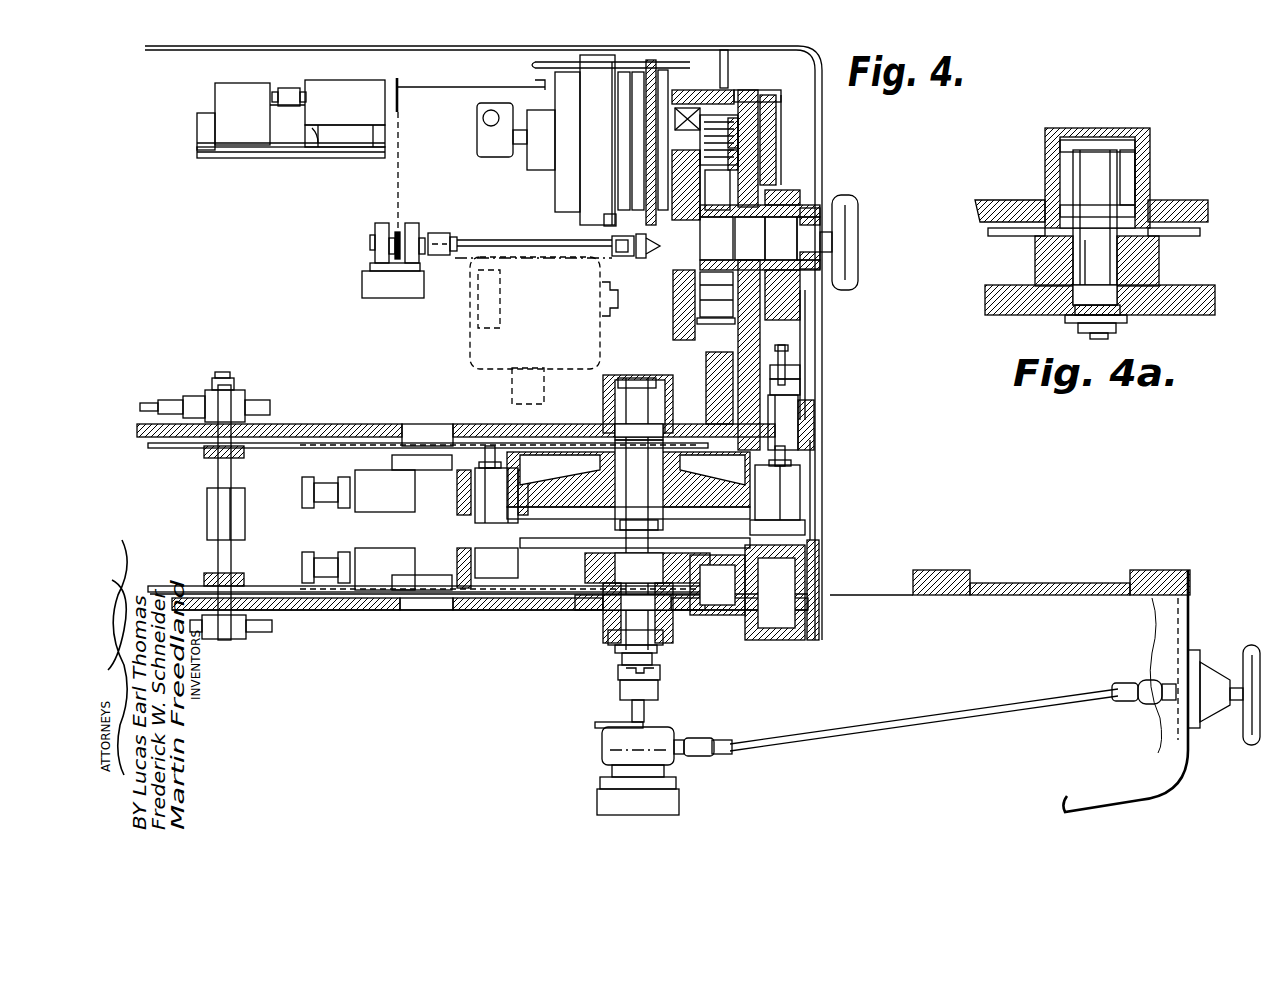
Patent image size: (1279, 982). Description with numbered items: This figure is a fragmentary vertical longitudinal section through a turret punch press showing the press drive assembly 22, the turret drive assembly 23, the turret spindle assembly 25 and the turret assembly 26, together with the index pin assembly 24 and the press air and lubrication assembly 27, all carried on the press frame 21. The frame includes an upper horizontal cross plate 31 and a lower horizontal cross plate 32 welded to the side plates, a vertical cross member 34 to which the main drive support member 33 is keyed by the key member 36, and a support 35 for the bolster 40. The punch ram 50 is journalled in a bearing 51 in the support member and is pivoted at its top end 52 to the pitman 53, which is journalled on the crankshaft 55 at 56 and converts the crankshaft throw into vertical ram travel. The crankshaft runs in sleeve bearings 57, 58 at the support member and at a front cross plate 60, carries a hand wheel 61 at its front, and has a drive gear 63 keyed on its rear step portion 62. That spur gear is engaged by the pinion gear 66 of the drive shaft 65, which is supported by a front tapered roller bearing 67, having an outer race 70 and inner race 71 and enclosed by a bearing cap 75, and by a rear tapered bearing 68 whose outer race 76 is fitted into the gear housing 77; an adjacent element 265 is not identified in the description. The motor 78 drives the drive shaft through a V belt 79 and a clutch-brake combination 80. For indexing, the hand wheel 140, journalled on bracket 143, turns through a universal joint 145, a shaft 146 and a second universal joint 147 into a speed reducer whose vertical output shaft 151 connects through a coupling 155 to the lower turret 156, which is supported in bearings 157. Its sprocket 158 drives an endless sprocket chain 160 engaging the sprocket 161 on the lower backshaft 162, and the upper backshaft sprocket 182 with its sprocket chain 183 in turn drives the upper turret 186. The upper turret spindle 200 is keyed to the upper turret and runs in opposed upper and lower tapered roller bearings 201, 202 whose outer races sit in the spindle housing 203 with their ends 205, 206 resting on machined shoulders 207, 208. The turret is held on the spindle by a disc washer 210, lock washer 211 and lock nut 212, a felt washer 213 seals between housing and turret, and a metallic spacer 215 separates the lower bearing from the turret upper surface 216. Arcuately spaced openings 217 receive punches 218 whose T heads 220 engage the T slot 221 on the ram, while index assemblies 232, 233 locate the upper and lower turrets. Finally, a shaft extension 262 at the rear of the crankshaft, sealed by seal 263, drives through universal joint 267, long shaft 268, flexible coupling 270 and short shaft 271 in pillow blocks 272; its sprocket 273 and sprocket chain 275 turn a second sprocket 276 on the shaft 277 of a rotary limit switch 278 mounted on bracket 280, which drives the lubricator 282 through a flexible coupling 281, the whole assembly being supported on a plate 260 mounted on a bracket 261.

In FIG. 4, the press frame 21 is at (352, 392).
In FIG. 4, the press drive assembly 22 is at (836, 168).
In FIG. 4, the turret drive assembly 23 is at (556, 748).
In FIG. 4, the index pin assembly 24 is at (345, 524).
In FIG. 4, the turret spindle assembly 25 is at (556, 658).
In FIG. 4, the turret assembly 26 is at (428, 522).
In FIG. 4, the press air and lubrication assembly 27 is at (152, 135).
In FIG. 4, the upper horizontal cross plate 31 is at (140, 430).
In FIG. 4, the lower horizontal cross plate 32 is at (312, 610).
In FIG. 4, the main drive support member 33 is at (800, 338).
In FIG. 4, the vertical cross member 34 is at (706, 388).
In FIG. 4, the vertical cross member 35 is at (738, 628).
In FIG. 4, the key member 36 is at (800, 386).
In FIG. 4, the bolster 40 is at (822, 586).
In FIG. 4, the punch ram 50 is at (783, 422).
In FIG. 4, the bearing 51 is at (814, 426).
In FIG. 4, the pivot 52 is at (800, 372).
In FIG. 4, the pitman 53 is at (790, 352).
In FIG. 4, the crankshaft 55 is at (781, 238).
In FIG. 4, the journal 56 is at (765, 298).
In FIG. 4, the sleeve bearing 57 is at (826, 228).
In FIG. 4, the sleeve bearing 58 is at (750, 238).
In FIG. 4, the front cross plate 60 is at (815, 207).
In FIG. 4, the hand wheel 61 is at (846, 240).
In FIG. 4, the rear step portion 62 is at (760, 237).
In FIG. 4, the drive gear 63 is at (700, 305).
In FIG. 4, the drive shaft 65 is at (730, 139).
In FIG. 4, the pinion gear 66 is at (716, 128).
In FIG. 4, the tapered roller bearing 67 is at (743, 150).
In FIG. 4, the tapered bearing 68 is at (690, 98).
In FIG. 4, the outer race 70 is at (776, 116).
In FIG. 4, the inner race 71 is at (772, 140).
In FIG. 4, the bearing cap 75 is at (775, 194).
In FIG. 4, the outer race 76 is at (655, 168).
In FIG. 4, the gear housing 77 is at (690, 300).
In FIG. 4, the motor 78 is at (535, 330).
In FIG. 4, the V belt 79 is at (600, 260).
In FIG. 4, the clutch-brake combination 80 is at (528, 190).
In FIG. 4, the hand wheel 140 is at (1250, 648).
In FIG. 4, the bracket 143 is at (1222, 712).
In FIG. 4, the universal joint 145 is at (1140, 662).
In FIG. 4, the shaft 146 is at (1020, 714).
In FIG. 4, the universal joint 147 is at (705, 752).
In FIG. 4, the vertical shaft 151 is at (632, 710).
In FIG. 4, the coupling 155 is at (660, 682).
In FIG. 4, the lower turret 156 is at (610, 570).
In FIG. 4, the bearings 157 is at (620, 632).
In FIG. 4, the sprocket 158 is at (560, 598).
In FIG. 4, the sprocket chain 160 is at (350, 610).
In FIG. 4, the sprocket 161 is at (180, 588).
In FIG. 4, the lower backshaft 162 is at (222, 560).
In FIG. 4, the sprocket 182 is at (195, 448).
In FIG. 4, the sprocket chain 183 is at (352, 456).
In FIG. 4, the upper turret 186 is at (628, 485).
In FIG. 4A, the upper turret 186 is at (1010, 292).
In FIG. 4, the upper turret spindle 200 is at (640, 396).
In FIG. 4A, the upper turret spindle 200 is at (1095, 227).
In FIG. 4, the upper tapered roller bearing 201 is at (612, 384).
In FIG. 4A, the upper tapered roller bearing 201 is at (1135, 150).
In FIG. 4, the lower tapered roller bearing 202 is at (618, 430).
In FIG. 4A, the lower tapered roller bearing 202 is at (1097, 202).
In FIG. 4, the spindle housing 203 is at (703, 410).
In FIG. 4A, the spindle housing 203 is at (1045, 172).
In FIG. 4A, the outer race end 205 is at (1040, 230).
In FIG. 4A, the outer race end 206 is at (1135, 172).
In FIG. 4A, the machined shoulder 207 is at (1150, 170).
In FIG. 4A, the machined shoulder 208 is at (992, 204).
In FIG. 4A, the disc washer 210 is at (1160, 284).
In FIG. 4A, the lock washer 211 is at (1125, 324).
In FIG. 4A, the lock nut 212 is at (1085, 332).
In FIG. 4A, the felt washer 213 is at (1155, 245).
In FIG. 4A, the metallic spacer 215 is at (1054, 261).
In FIG. 4A, the upper surface 216 is at (1091, 271).
In FIG. 4, the openings 217 is at (805, 526).
In FIG. 4, the punches 218 is at (800, 490).
In FIG. 4, the T head 220 is at (791, 462).
In FIG. 4, the T slot 221 is at (808, 450).
In FIG. 4, the index assembly 232 is at (268, 494).
In FIG. 4, the index assembly 233 is at (298, 528).
In FIG. 4, the plate 260 is at (252, 162).
In FIG. 4, the bracket 261 is at (205, 143).
In FIG. 4, the shaft extension 262 is at (622, 256).
In FIG. 4, the seal 263 is at (641, 258).
In FIG. 4, the block 265 is at (607, 220).
In FIG. 4, the universal joint 267 is at (612, 242).
In FIG. 4, the long shaft 268 is at (472, 240).
In FIG. 4, the flexible coupling 270 is at (437, 233).
In FIG. 4, the short shaft 271 is at (408, 265).
In FIG. 4, the pillow blocks 272 is at (380, 224).
In FIG. 4, the sprocket 273 is at (400, 232).
In FIG. 4, the sprocket chain 275 is at (400, 135).
In FIG. 4, the second sprocket 276 is at (405, 90).
In FIG. 4, the shaft 277 is at (396, 82).
In FIG. 4, the rotary limit switch 278 is at (345, 102).
In FIG. 4, the bracket 280 is at (320, 148).
In FIG. 4, the flexible coupling 281 is at (289, 88).
In FIG. 4, the lubricator 282 is at (242, 114).